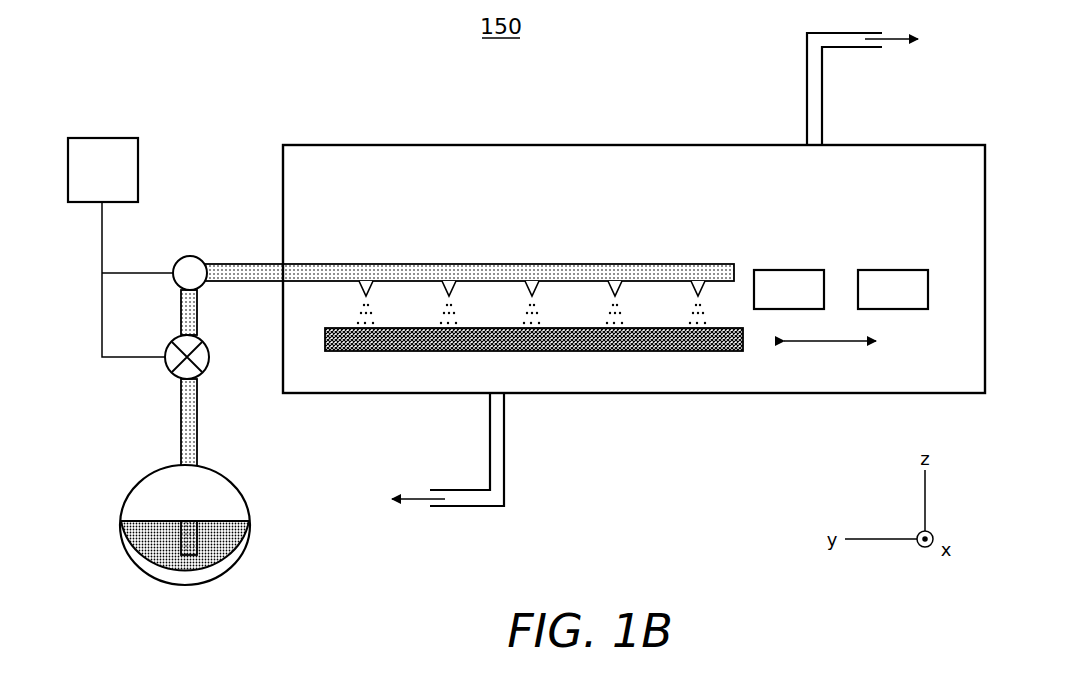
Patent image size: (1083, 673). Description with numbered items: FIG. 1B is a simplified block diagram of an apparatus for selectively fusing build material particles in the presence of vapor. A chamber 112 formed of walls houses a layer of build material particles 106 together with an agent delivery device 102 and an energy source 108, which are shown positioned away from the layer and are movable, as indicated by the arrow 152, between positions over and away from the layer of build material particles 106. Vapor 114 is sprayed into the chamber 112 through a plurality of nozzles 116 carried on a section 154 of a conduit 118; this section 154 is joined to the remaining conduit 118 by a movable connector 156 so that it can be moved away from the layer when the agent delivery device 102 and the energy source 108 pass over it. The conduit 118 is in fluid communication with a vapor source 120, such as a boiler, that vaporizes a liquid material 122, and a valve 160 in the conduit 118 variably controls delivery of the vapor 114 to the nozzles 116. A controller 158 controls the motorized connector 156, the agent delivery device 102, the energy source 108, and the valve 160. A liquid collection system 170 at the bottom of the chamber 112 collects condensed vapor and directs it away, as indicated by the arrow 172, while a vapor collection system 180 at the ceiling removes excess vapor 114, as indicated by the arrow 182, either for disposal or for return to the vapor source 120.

The controller 158 is at (118, 137).
The chamber 112 is at (338, 145).
The connector 156 is at (197, 257).
The section of the conduit 154 is at (383, 264).
The nozzles 116 is at (449, 285).
The vapor 114 is at (355, 316).
The layer of build material particles 106 is at (568, 328).
The agent delivery device 102 is at (786, 270).
The energy source 108 is at (900, 270).
The arrow 152 is at (828, 343).
The valve 160 is at (172, 370).
The conduit 118 is at (200, 403).
The liquid material 122 is at (216, 521).
The vapor source 120 is at (238, 560).
The vapor collection system 180 is at (766, 72).
The arrow 182 is at (886, 40).
The liquid collection system 170 is at (540, 440).
The arrow 172 is at (413, 502).